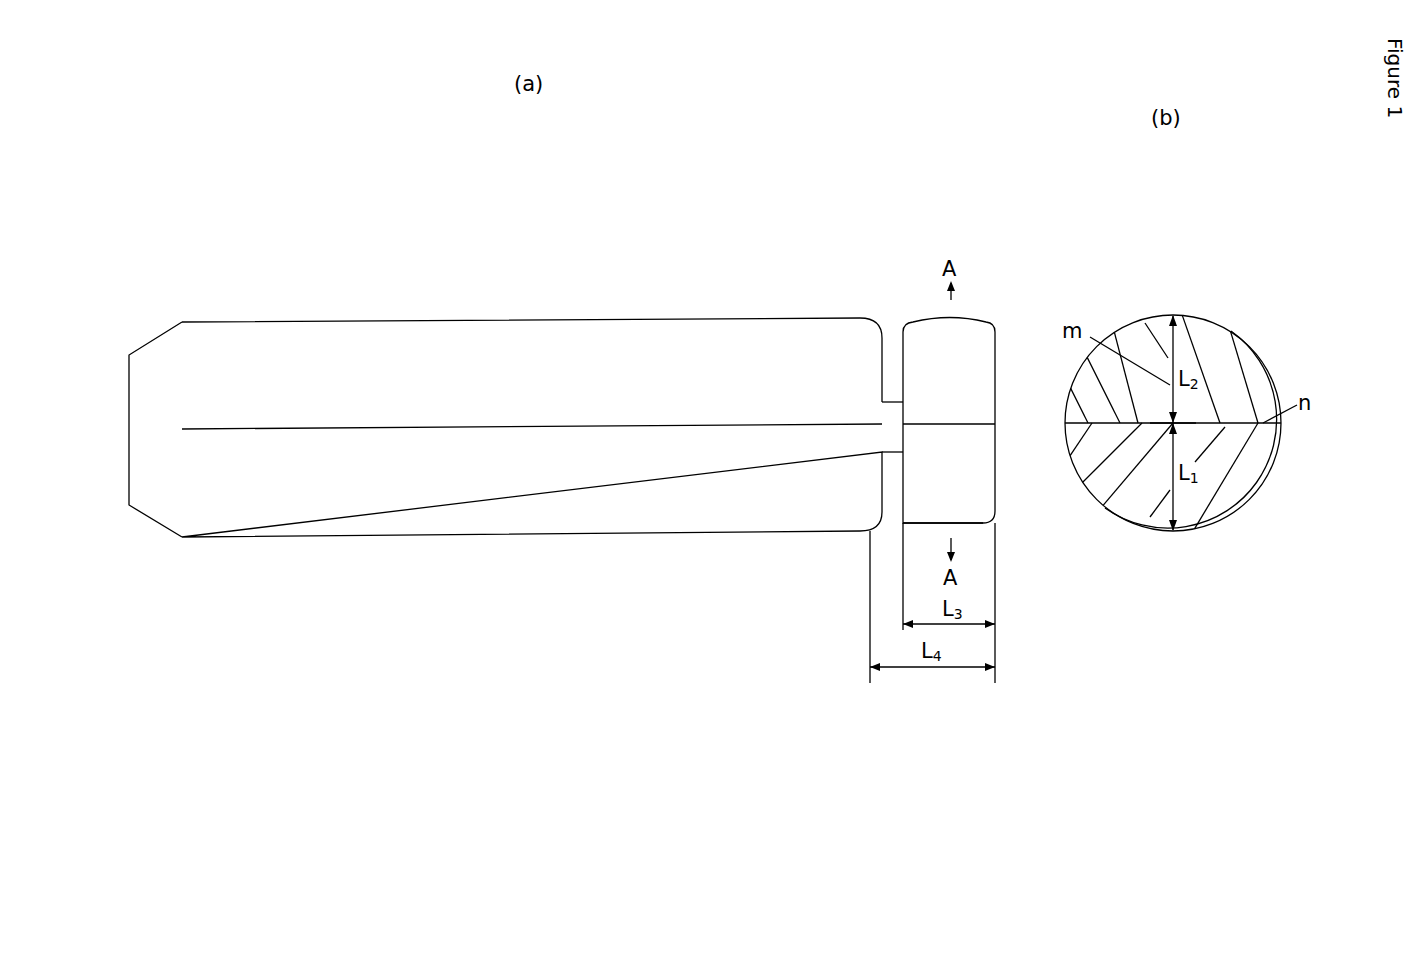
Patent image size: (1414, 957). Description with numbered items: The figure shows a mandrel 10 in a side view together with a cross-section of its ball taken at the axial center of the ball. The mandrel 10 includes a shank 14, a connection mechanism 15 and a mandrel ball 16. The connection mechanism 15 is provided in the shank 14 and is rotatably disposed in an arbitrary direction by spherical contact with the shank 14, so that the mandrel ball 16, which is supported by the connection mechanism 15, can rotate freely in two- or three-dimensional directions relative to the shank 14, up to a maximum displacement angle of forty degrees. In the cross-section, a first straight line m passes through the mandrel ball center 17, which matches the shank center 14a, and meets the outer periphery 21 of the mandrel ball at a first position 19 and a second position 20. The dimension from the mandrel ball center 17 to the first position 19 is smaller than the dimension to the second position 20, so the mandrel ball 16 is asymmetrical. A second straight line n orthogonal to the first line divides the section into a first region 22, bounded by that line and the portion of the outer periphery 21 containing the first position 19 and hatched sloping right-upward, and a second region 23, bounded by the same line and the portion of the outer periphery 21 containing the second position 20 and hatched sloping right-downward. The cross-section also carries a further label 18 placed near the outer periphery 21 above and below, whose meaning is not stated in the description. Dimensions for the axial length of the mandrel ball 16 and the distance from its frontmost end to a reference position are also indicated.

The mandrel 10 is at (562, 196).
The shank 14 is at (486, 316).
The shank center 14a is at (357, 426).
The connection mechanism 15 is at (897, 396).
The mandrel ball 16 is at (985, 314).
The mandrel ball center 17 is at (926, 430).
The upper section region of head 18 is at (1130, 323).
The first position 19 is at (948, 525).
The second position 20 is at (949, 315).
The outer periphery of the mandrel ball 21 is at (1244, 351).
The first region 22 is at (1249, 463).
The second region 23 is at (1124, 387).